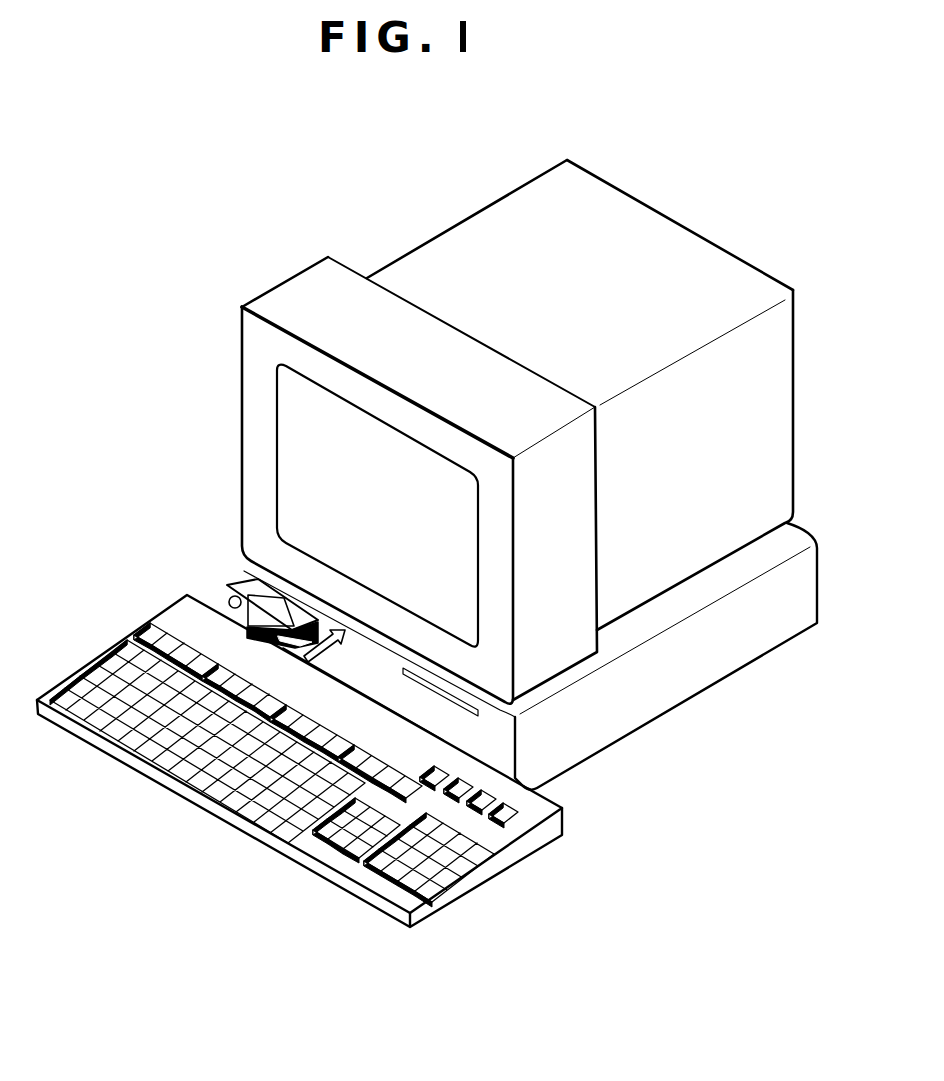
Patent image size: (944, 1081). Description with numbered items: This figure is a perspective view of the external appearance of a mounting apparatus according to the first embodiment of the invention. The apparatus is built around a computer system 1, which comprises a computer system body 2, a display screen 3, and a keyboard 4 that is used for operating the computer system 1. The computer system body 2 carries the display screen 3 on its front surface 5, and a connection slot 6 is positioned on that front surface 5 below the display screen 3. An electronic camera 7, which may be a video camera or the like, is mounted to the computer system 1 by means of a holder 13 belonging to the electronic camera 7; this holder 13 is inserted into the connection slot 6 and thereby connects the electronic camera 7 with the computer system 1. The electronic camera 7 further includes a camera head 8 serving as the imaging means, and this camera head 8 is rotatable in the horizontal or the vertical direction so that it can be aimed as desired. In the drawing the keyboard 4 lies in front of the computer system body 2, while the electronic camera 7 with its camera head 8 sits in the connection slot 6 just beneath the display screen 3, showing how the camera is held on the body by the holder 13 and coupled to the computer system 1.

The computer system 1 is at (370, 176).
The computer system body 2 is at (295, 288).
The display screen 3 is at (283, 408).
The keyboard 4 is at (240, 808).
The front surface 5 is at (252, 340).
The connection slot 6 is at (325, 627).
The electronic camera 7 is at (231, 559).
The camera head 8 is at (222, 586).
The holder 13 is at (293, 630).